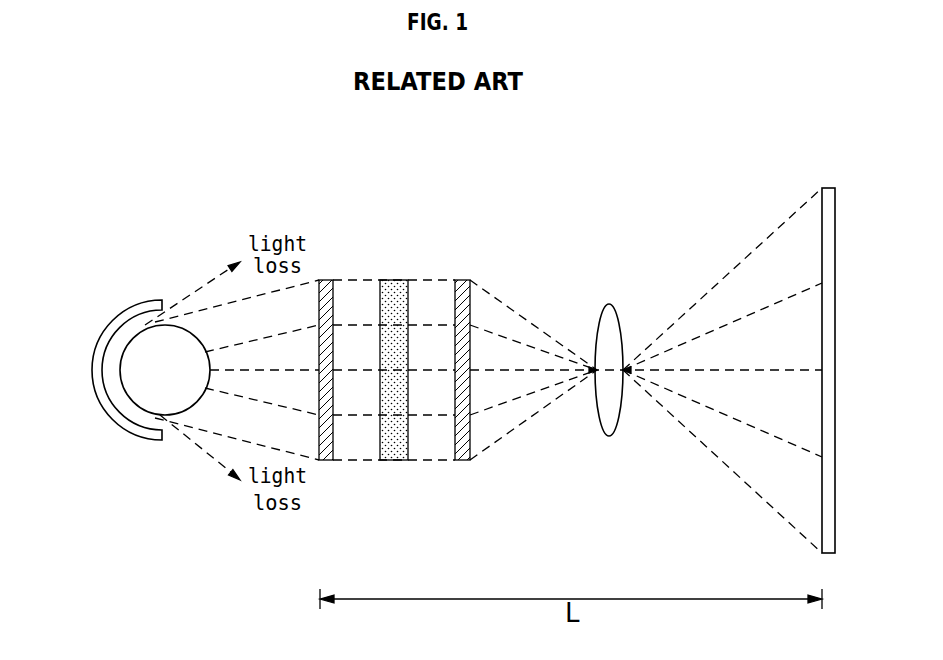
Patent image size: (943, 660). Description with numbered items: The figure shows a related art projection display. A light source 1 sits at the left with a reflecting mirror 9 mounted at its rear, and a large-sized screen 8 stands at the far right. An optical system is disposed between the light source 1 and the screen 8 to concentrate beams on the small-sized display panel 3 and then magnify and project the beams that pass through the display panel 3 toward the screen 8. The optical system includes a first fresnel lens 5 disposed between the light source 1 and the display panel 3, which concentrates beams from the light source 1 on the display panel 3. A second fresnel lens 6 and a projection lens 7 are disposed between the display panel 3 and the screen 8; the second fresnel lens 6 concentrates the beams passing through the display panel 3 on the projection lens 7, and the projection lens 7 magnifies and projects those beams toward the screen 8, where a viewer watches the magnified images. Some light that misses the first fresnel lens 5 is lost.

The light source 1 is at (130, 378).
The reflecting mirror 9 is at (100, 349).
The first fresnel lens 5 is at (323, 282).
The display panel 3 is at (392, 282).
The second fresnel lens 6 is at (460, 282).
The projection lens 7 is at (609, 312).
The screen 8 is at (828, 200).